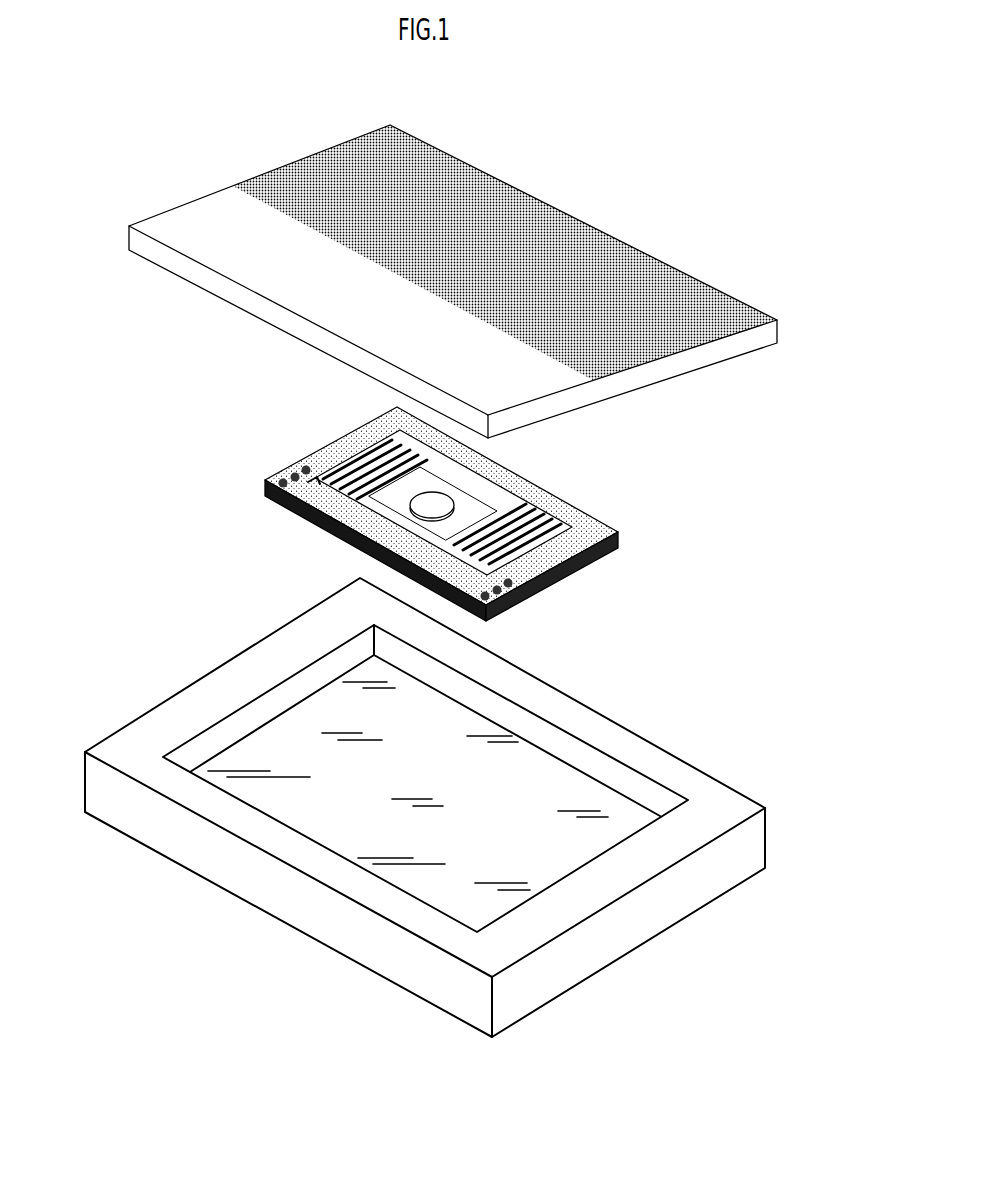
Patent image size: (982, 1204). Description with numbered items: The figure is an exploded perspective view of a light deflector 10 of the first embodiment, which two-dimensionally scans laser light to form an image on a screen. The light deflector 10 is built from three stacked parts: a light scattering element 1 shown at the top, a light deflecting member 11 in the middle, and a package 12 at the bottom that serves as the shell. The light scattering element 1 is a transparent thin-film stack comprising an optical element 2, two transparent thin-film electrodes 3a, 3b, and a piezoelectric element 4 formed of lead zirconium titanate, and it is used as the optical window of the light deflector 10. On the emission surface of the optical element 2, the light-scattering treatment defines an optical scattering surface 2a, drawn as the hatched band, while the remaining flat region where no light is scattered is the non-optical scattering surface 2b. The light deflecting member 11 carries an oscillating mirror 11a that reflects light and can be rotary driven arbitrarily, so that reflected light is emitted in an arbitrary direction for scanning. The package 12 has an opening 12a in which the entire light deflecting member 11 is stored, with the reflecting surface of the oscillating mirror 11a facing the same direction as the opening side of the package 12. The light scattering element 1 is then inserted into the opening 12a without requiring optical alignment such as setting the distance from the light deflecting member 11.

The light scattering element 1 is at (109, 282).
The light deflector 10 is at (790, 566).
The optical element 2 is at (695, 363).
The optical scattering surface 2a is at (440, 162).
The non-optical scattering surface 2b is at (310, 293).
The electrode 3a is at (453, 265).
The electrode 3b is at (453, 265).
The piezoelectric element 4 is at (453, 265).
The light deflecting member 11 is at (293, 494).
The oscillating mirror 11a is at (443, 493).
The package 12 is at (248, 885).
The opening 12a is at (570, 783).